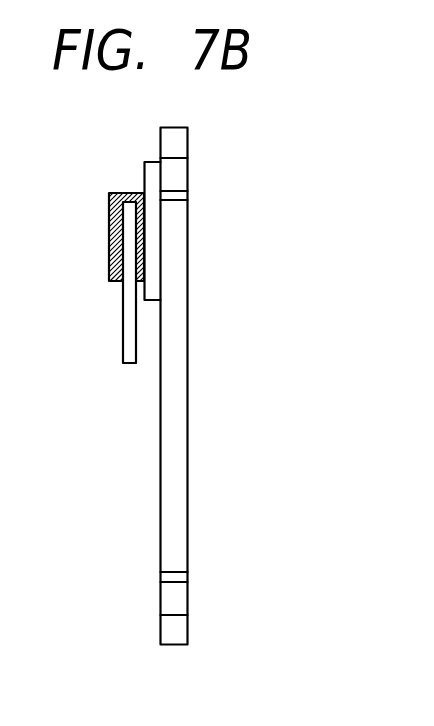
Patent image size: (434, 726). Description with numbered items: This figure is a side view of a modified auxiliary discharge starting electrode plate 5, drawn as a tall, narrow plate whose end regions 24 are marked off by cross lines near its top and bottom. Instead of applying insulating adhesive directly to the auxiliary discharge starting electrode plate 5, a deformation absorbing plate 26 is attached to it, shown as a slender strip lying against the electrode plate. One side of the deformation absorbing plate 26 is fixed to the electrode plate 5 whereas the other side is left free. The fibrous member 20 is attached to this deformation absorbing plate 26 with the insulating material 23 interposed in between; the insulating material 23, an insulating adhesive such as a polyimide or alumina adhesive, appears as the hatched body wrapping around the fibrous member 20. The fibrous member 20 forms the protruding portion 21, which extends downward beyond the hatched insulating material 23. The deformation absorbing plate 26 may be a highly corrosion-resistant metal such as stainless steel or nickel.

The auxiliary discharge starting electrode plate 5 is at (165, 483).
The fibrous member 20 is at (127, 277).
The protruding portion 21 is at (123, 337).
The insulating material 23 is at (112, 213).
The end portion of substrate 24 is at (180, 174).
The deformation absorbing plate 26 is at (153, 164).